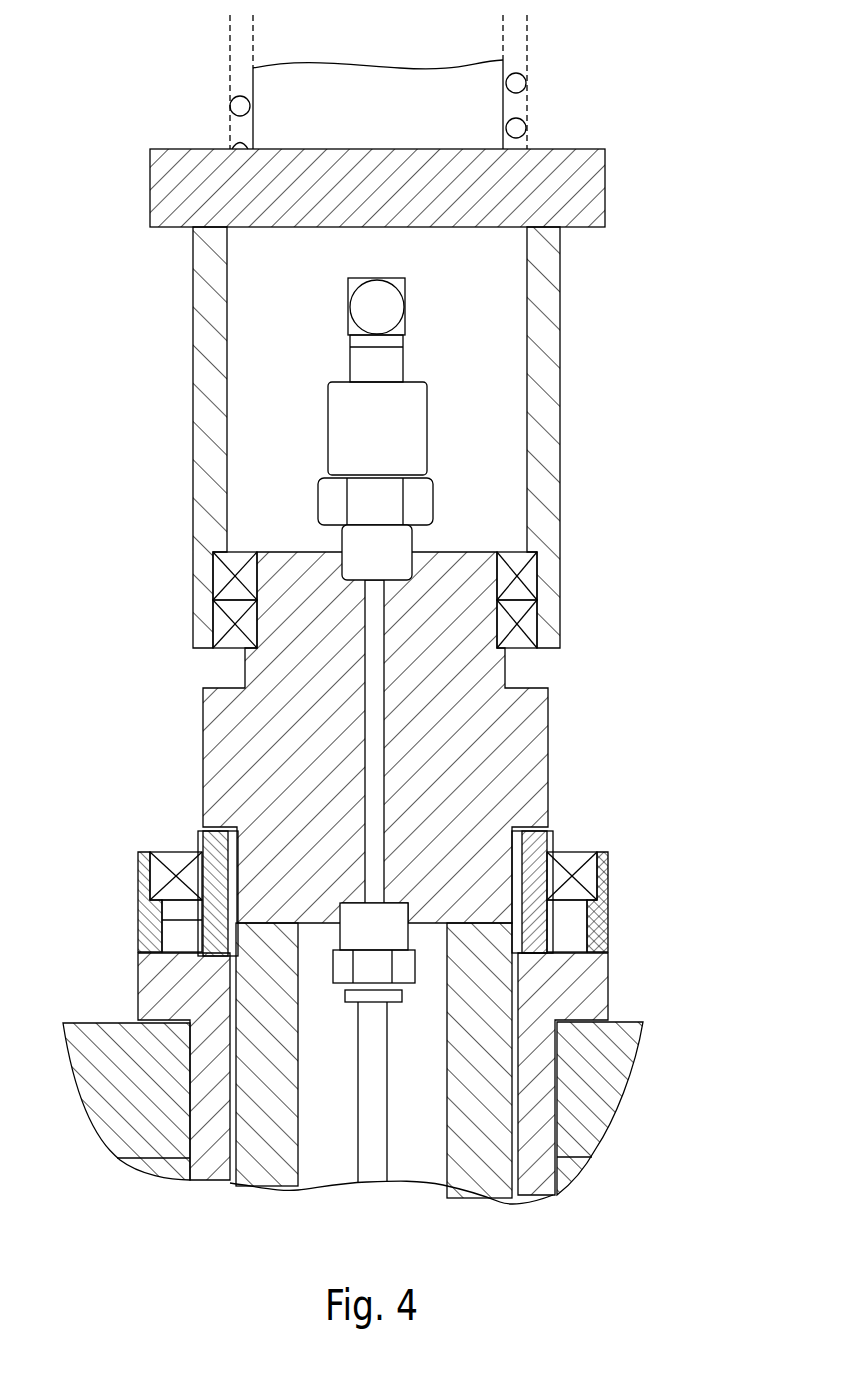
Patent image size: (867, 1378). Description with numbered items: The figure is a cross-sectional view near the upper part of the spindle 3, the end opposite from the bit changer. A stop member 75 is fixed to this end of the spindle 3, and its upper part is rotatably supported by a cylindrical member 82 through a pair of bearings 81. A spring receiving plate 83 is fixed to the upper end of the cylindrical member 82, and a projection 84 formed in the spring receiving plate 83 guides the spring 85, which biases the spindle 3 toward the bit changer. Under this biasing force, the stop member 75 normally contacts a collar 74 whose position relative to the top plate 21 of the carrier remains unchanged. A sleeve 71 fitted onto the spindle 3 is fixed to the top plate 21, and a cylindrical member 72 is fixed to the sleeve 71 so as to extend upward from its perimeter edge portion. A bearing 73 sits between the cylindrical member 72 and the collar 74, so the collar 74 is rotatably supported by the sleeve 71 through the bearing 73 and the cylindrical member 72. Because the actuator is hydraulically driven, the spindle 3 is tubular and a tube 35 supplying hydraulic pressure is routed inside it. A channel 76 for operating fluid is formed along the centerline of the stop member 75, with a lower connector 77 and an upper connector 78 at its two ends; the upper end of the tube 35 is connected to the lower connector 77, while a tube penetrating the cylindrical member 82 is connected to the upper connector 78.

The spindle 3 is at (482, 1170).
The top plate 21 is at (605, 1083).
The tube 35 is at (376, 1130).
The sleeve 71 is at (580, 985).
The cylindrical member 72 is at (608, 925).
The bearing 73 is at (590, 878).
The collar 74 is at (140, 917).
The stop member 75 is at (478, 770).
The channel 76 is at (372, 727).
The connector 77 is at (333, 972).
The connector 78 is at (348, 418).
The bearings 81 is at (532, 573).
The cylindrical member 82 is at (548, 412).
The spring receiving plate 83 is at (587, 190).
The projection 84 is at (290, 122).
The spring 85 is at (522, 85).